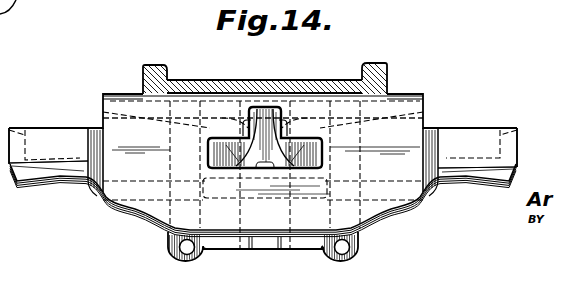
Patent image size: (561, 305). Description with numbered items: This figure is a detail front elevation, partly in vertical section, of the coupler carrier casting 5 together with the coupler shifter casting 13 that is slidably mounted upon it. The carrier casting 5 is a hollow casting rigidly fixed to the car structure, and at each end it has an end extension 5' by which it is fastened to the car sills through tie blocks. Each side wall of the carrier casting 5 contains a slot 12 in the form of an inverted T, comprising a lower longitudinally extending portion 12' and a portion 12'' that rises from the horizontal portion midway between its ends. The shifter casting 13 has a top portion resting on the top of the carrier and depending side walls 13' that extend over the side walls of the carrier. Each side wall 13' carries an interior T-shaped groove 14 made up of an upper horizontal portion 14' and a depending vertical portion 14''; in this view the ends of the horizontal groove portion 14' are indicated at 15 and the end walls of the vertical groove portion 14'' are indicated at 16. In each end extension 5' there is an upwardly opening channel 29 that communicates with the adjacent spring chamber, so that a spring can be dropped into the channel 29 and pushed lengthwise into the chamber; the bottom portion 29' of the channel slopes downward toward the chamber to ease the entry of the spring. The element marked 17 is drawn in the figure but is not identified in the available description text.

The coupler carrier casting 5 is at (263, 172).
The end extension 5' is at (263, 192).
The slot 12 is at (247, 146).
The lower longitudinally extending portion 12' is at (266, 184).
The upwardly extending portion 12'' is at (295, 95).
The coupler shifter casting 13 is at (258, 74).
The side wall 13' is at (271, 259).
The T-shaped groove 14 is at (221, 180).
The upper horizontal portion 14' is at (311, 179).
The depending vertical portion 14'' is at (265, 110).
The ends of the upper horizontal groove portion 15 is at (206, 128).
The end walls of the vertical groove portion 16 is at (243, 218).
The rib 17 is at (153, 66).
The channel 29 is at (263, 132).
The bottom portion of channel 29' is at (273, 121).